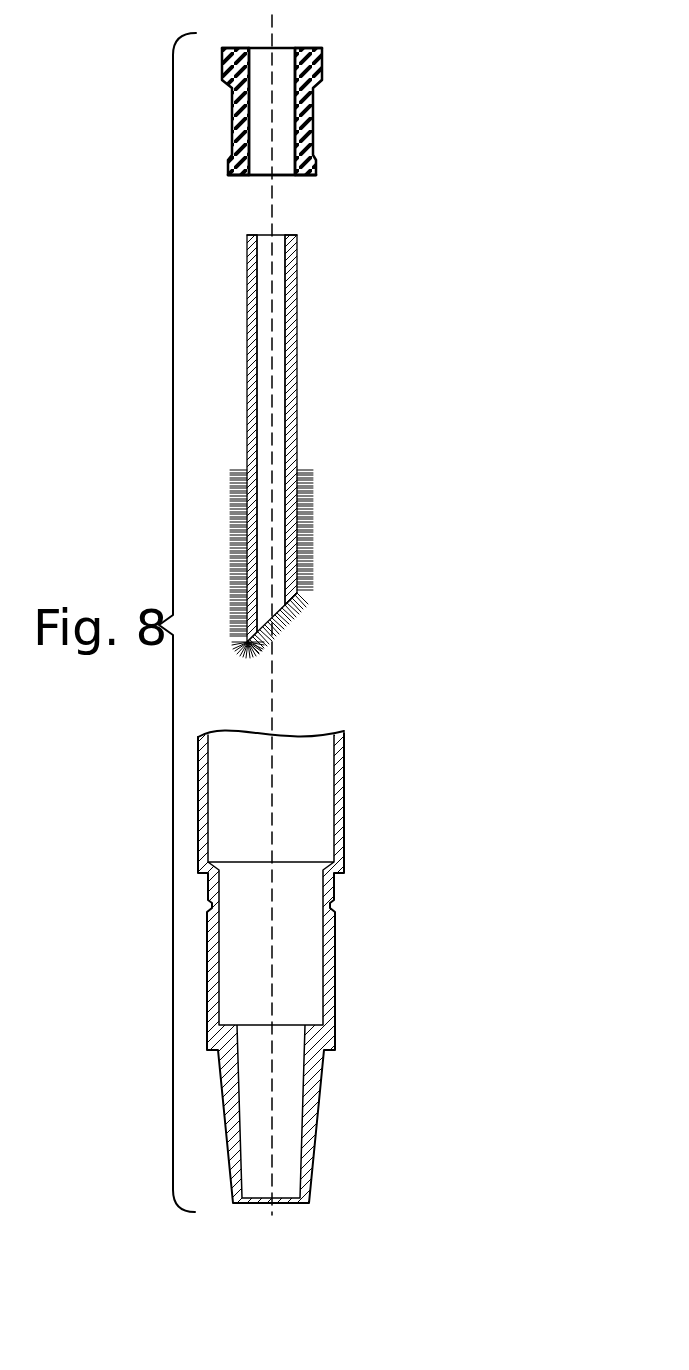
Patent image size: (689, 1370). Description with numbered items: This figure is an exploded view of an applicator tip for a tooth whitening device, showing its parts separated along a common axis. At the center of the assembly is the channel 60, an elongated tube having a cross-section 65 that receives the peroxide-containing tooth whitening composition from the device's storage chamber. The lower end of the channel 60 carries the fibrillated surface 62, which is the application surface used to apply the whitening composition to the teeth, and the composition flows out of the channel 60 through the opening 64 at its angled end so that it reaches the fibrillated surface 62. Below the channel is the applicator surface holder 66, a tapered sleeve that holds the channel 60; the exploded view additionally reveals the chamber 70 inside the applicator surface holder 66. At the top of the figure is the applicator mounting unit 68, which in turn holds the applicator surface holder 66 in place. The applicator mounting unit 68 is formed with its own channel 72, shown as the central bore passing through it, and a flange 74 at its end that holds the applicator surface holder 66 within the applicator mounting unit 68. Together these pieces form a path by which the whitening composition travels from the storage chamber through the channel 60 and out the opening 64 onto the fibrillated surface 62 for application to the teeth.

The channel 60 is at (297, 388).
The fibrillated surface 62 is at (305, 547).
The opening 64 is at (290, 630).
The cross-section 65 is at (278, 330).
The applicator surface holder 66 is at (318, 1082).
The applicator mounting unit 68 is at (321, 70).
The chamber 70 is at (305, 968).
The channel 72 is at (285, 126).
The flange 74 is at (317, 167).